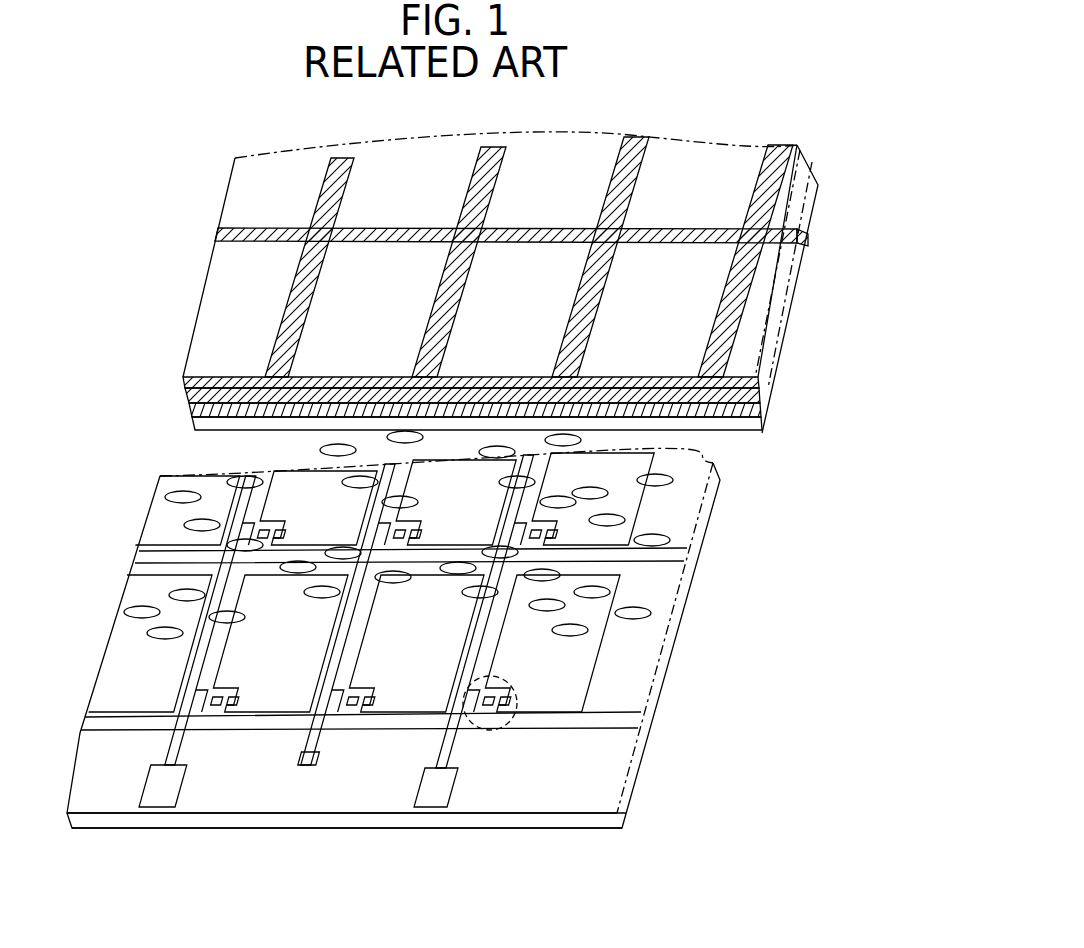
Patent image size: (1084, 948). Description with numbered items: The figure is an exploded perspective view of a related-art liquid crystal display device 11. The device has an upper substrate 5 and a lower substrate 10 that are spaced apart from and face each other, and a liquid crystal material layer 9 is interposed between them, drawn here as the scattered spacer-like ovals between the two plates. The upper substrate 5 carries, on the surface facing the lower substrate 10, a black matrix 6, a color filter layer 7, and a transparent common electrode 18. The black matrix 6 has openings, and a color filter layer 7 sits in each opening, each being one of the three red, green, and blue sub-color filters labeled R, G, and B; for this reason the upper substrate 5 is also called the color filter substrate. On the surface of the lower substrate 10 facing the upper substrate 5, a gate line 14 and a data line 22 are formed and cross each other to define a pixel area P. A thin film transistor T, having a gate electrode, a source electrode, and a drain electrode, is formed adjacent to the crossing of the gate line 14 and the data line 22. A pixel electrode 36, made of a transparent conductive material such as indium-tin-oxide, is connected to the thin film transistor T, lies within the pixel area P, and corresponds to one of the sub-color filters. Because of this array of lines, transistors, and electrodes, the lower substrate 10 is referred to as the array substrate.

The color filter layer 7 is at (735, 193).
The black matrix 6 is at (800, 236).
The upper substrate 5 is at (757, 388).
The transparent common electrode 18 is at (760, 425).
The liquid crystal material layer 9 is at (667, 540).
The pixel area P is at (633, 645).
The LCD device 11 is at (795, 680).
The pixel electrode 36 is at (590, 687).
The gate line 14 is at (595, 728).
The lower substrate 10 is at (583, 822).
The thin film transistor T is at (510, 722).
The data line 22 is at (437, 758).